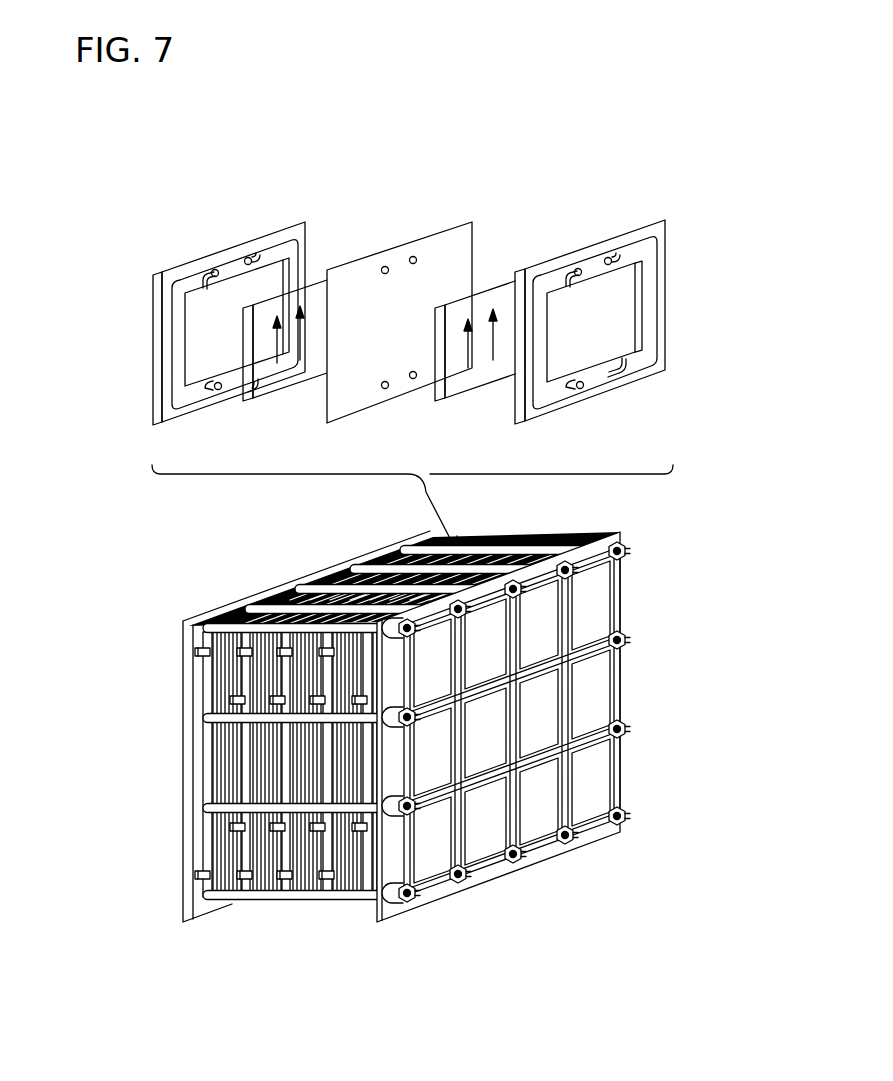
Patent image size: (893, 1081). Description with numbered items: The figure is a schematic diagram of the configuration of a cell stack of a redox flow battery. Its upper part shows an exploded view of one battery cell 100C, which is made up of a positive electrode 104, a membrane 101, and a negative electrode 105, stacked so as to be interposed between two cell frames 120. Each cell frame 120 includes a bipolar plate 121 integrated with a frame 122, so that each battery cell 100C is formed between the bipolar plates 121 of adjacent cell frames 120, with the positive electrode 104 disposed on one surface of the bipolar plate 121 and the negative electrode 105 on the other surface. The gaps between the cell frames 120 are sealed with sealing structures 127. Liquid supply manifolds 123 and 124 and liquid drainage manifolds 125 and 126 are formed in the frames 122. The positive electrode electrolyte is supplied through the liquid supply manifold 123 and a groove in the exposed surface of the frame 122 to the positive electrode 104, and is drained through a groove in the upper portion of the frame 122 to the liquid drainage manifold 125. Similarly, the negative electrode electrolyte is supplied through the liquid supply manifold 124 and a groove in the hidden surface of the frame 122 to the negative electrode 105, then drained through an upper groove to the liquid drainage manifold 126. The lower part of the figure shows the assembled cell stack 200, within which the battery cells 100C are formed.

The battery cell 100C is at (412, 326).
The membrane 101 is at (422, 232).
The positive electrode 104 is at (298, 380).
The negative electrode 105 is at (460, 387).
The cell frame 120 is at (73, 357).
The bipolar plate 121 is at (203, 343).
The frame 122 is at (157, 332).
The liquid supply manifold 123 is at (640, 377).
The liquid supply manifold 124 is at (219, 389).
The liquid drainage manifold 125 is at (213, 270).
The liquid drainage manifold 126 is at (248, 257).
The sealing structure 127 is at (302, 248).
The cell stack 200 is at (648, 698).